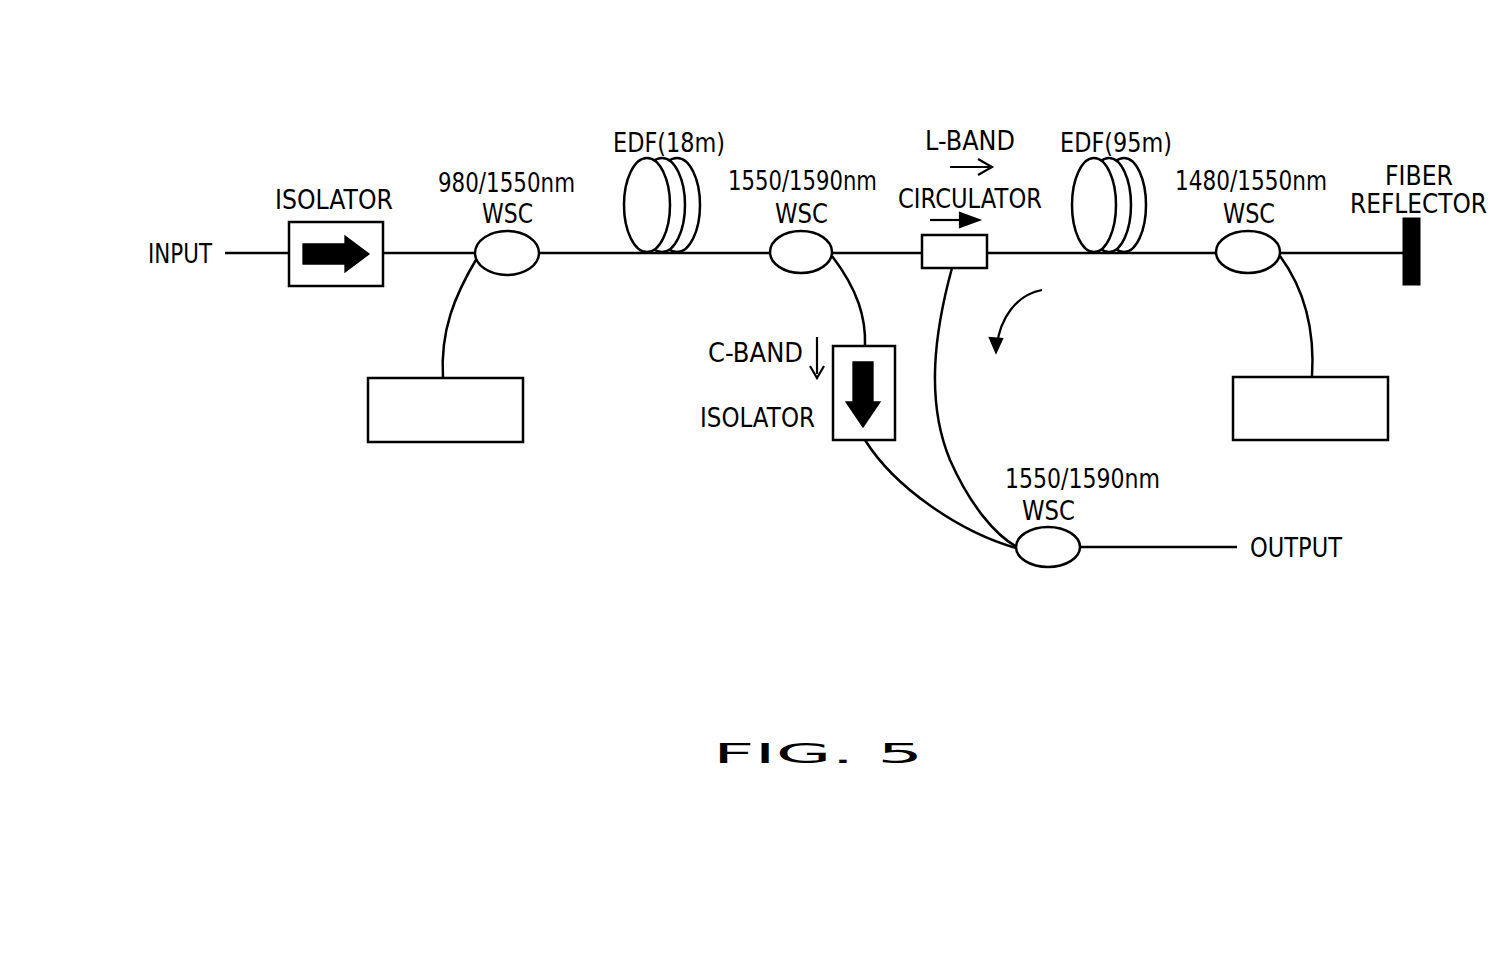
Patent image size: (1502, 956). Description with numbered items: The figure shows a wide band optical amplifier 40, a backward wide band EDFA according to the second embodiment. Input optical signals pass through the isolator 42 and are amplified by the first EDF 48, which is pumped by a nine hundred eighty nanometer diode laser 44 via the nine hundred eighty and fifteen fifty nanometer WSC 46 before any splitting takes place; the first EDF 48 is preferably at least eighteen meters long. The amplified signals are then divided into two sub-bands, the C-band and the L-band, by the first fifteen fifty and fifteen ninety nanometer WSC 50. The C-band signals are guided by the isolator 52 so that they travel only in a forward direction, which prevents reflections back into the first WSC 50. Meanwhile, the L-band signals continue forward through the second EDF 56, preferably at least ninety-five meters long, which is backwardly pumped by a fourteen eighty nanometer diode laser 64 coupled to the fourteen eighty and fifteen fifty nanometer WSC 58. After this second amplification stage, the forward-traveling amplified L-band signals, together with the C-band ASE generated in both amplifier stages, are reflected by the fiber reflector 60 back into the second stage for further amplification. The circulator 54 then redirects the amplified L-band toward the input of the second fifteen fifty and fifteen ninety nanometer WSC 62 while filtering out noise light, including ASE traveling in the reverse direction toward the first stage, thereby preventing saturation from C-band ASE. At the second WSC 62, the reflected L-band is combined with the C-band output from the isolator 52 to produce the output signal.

The wide band optical amplifier 40 is at (1242, 86).
The isolator 42 is at (335, 286).
The 980nm pump laser diode 44 is at (523, 410).
The 980/1550 nm WSC 46 is at (528, 270).
The first EDF 48 is at (693, 255).
The first 1550/1590 nm WSC 50 is at (792, 275).
The isolator 52 is at (847, 440).
The circulator 54 is at (940, 268).
The second EDF 56 is at (1140, 255).
The 1480/1550 nm WSC 58 is at (1250, 273).
The fiber reflector 60 is at (1420, 252).
The second 1550/1590 nm WSC 62 is at (1050, 567).
The 1480 nm diode laser 64 is at (1388, 407).